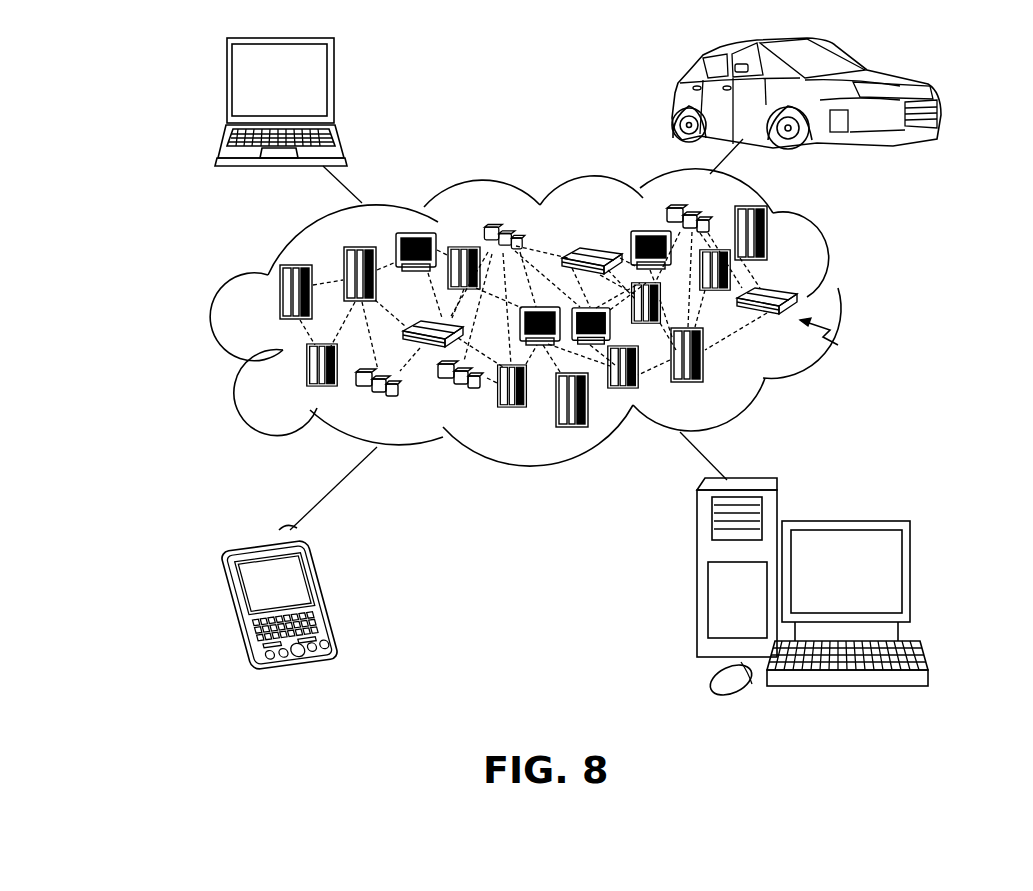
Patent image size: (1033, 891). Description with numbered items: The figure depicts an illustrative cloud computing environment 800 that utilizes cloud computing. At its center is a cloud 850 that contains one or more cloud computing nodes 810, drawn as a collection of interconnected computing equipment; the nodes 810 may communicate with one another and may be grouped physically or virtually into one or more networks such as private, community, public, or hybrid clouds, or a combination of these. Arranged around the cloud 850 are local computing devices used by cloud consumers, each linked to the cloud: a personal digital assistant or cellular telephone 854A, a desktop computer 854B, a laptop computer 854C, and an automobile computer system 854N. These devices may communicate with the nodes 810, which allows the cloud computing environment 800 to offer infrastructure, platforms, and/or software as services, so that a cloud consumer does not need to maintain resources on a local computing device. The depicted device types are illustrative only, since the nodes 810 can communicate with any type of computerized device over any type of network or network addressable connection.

The cloud computing environment 800 is at (98, 58).
The cloud 850 is at (832, 294).
The cloud computing nodes 810 is at (845, 340).
The personal digital assistant (PDA) or cellular telephone 854A is at (327, 597).
The desktop computer 854B is at (846, 520).
The laptop computer 854C is at (336, 90).
The automobile computer system 854N is at (676, 101).